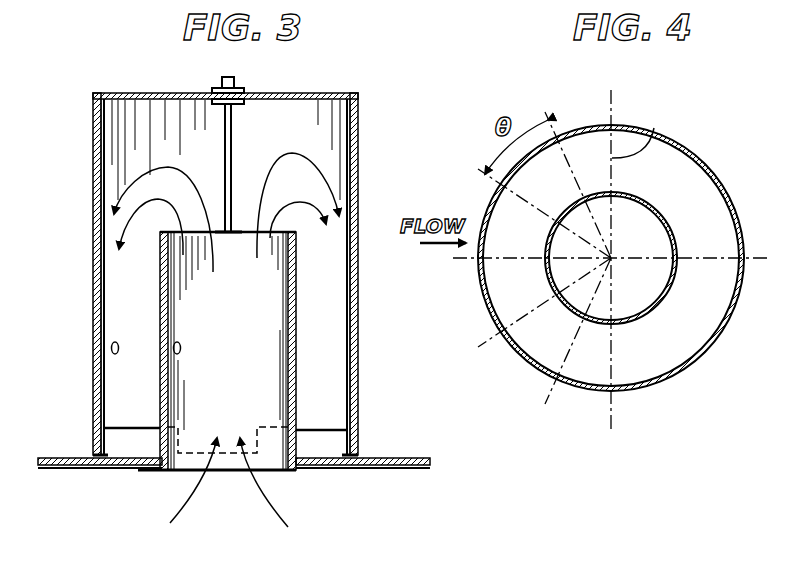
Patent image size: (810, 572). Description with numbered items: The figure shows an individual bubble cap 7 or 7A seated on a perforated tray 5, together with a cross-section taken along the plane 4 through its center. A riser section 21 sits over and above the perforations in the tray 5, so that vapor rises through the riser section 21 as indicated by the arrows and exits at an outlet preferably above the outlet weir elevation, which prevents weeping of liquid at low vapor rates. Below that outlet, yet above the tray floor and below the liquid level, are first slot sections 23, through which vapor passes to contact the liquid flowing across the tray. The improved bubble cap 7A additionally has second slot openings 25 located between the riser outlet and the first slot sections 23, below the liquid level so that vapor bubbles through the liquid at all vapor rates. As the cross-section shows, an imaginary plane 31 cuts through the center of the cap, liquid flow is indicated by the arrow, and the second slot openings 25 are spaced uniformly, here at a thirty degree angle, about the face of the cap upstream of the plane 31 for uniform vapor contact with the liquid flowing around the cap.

In FIG. 3, the bubble cap 7 is at (274, 274).
In FIG. 4, the bubble cap 7 is at (623, 255).
In FIG. 3, the bubble cap 7A is at (357, 135).
In FIG. 4, the bubble cap 7A is at (683, 139).
In FIG. 3, the riser section 21 is at (296, 303).
In FIG. 4, the riser section 21 is at (662, 217).
In FIG. 3, the second slot openings 25 is at (174, 348).
In FIG. 4, the second slot openings 25 is at (557, 137).
In FIG. 3, the first slot sections 23 is at (120, 437).
In FIG. 3, the tray 5 is at (380, 460).
In FIG. 3, the plane 4- 4 is at (75, 348).
In FIG. 4, the imaginary plane 31 is at (654, 128).